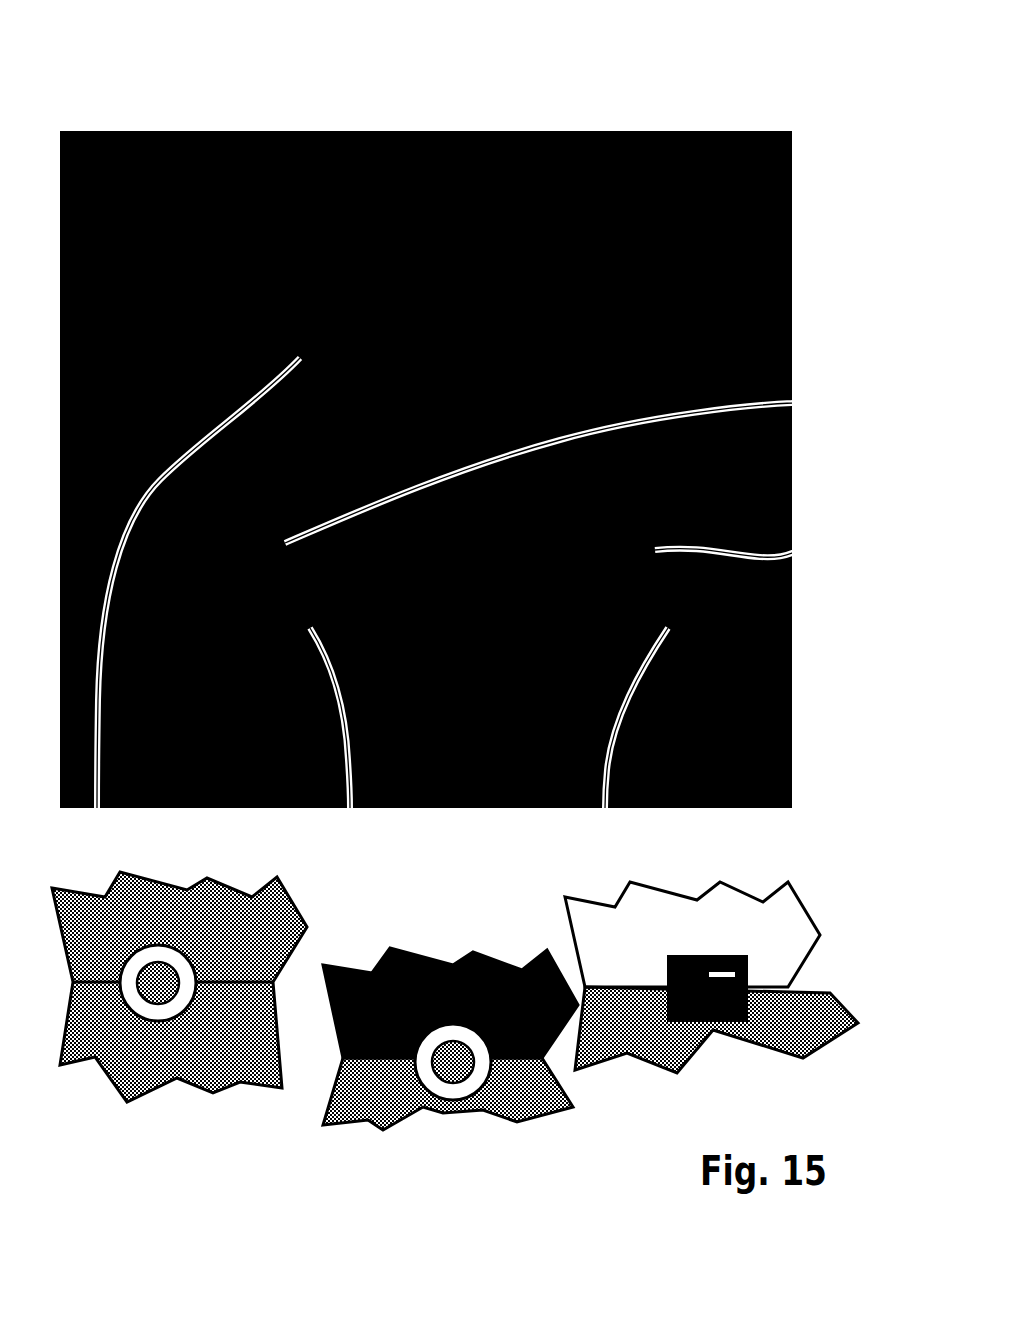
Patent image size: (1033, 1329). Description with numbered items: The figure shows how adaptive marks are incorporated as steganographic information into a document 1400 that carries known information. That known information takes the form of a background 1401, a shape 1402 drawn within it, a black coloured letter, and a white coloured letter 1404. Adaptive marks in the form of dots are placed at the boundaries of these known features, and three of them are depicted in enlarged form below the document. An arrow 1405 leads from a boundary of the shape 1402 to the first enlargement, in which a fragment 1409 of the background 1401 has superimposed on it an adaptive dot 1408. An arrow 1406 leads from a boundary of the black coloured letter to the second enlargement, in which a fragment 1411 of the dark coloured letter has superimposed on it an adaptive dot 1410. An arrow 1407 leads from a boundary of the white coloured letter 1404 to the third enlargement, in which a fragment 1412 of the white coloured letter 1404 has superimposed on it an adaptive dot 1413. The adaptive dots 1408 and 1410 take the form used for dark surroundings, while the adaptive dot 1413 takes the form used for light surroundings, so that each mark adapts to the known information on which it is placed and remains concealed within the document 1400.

The document 1400 is at (458, 556).
The background 1401 is at (426, 428).
The shape 1402 is at (422, 153).
The white coloured letter 1404 is at (509, 513).
The arrow 1405 is at (179, 973).
The arrow 1406 is at (441, 996).
The arrow 1407 is at (711, 960).
The adaptive dot 1408 is at (138, 1015).
The fragment of the background 1409 is at (222, 983).
The adaptive dot 1410 is at (447, 1100).
The fragment of the dark coloured letter 1411 is at (518, 1058).
The fragment of the white coloured letter 1412 is at (608, 987).
The adaptive dot 1413 is at (728, 1022).